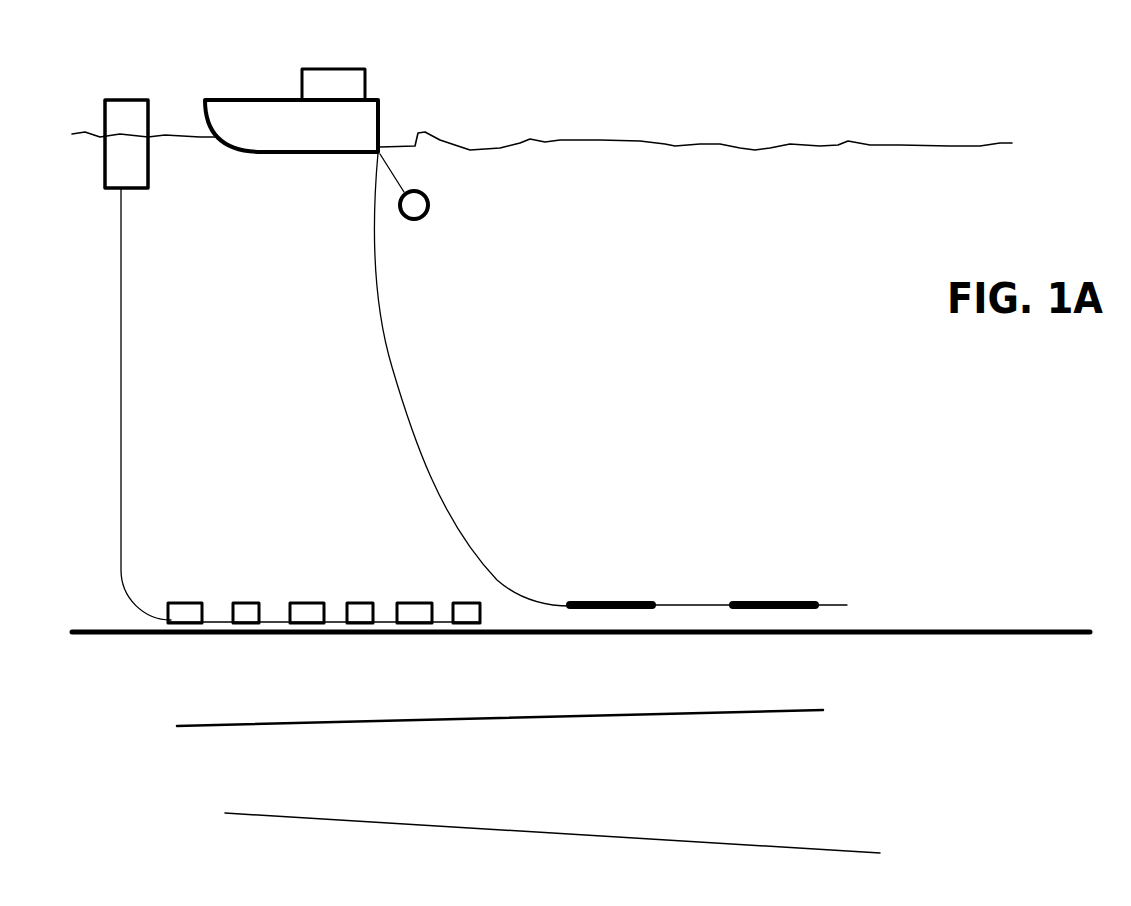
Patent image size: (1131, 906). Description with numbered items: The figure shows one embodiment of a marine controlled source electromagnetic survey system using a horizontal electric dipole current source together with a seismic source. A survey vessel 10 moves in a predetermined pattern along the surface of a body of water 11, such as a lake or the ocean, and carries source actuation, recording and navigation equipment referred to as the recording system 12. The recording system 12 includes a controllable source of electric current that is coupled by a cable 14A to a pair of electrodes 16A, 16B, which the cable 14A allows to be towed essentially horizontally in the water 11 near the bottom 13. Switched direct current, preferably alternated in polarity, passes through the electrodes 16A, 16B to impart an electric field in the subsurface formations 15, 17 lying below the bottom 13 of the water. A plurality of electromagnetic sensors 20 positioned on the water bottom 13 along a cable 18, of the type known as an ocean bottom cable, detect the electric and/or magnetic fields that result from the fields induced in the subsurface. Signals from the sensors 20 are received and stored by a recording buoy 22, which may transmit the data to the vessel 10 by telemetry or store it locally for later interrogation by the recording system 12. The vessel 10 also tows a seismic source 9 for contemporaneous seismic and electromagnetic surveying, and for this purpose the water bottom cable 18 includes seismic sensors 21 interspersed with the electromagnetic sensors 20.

The seismic source 9 is at (420, 219).
The survey vessel 10 is at (245, 110).
The body of water 11 is at (645, 140).
The recording system 12 is at (342, 75).
The water bottom 13 is at (840, 630).
The cable 14A is at (392, 367).
The subsurface formation 15 is at (503, 720).
The electrode 16A is at (598, 601).
The electrode 16B is at (760, 601).
The subsurface formation 17 is at (668, 843).
The cable 18 is at (121, 386).
The electromagnetic sensor 20 is at (195, 603).
The seismic sensor 21 is at (255, 603).
The recording buoy 22 is at (123, 98).